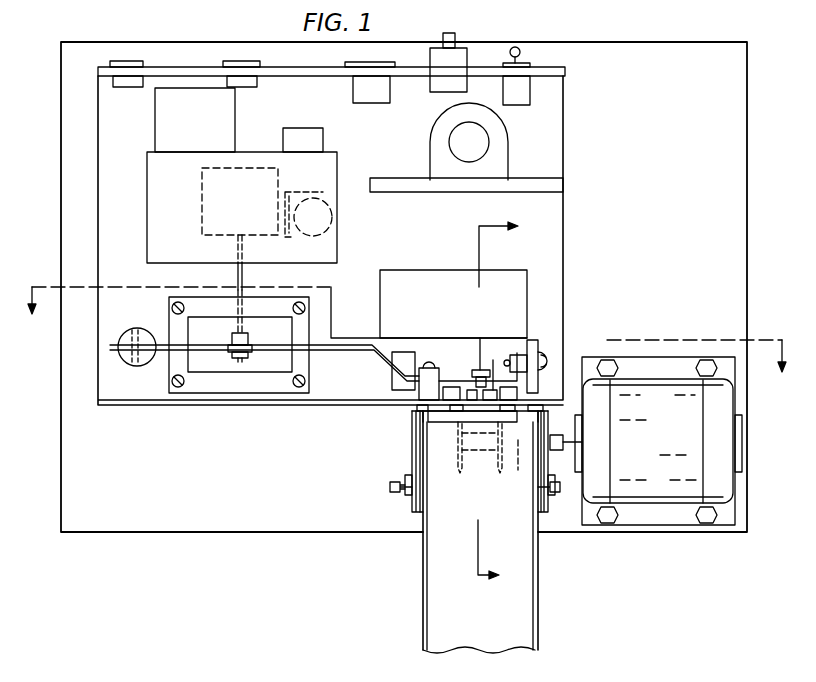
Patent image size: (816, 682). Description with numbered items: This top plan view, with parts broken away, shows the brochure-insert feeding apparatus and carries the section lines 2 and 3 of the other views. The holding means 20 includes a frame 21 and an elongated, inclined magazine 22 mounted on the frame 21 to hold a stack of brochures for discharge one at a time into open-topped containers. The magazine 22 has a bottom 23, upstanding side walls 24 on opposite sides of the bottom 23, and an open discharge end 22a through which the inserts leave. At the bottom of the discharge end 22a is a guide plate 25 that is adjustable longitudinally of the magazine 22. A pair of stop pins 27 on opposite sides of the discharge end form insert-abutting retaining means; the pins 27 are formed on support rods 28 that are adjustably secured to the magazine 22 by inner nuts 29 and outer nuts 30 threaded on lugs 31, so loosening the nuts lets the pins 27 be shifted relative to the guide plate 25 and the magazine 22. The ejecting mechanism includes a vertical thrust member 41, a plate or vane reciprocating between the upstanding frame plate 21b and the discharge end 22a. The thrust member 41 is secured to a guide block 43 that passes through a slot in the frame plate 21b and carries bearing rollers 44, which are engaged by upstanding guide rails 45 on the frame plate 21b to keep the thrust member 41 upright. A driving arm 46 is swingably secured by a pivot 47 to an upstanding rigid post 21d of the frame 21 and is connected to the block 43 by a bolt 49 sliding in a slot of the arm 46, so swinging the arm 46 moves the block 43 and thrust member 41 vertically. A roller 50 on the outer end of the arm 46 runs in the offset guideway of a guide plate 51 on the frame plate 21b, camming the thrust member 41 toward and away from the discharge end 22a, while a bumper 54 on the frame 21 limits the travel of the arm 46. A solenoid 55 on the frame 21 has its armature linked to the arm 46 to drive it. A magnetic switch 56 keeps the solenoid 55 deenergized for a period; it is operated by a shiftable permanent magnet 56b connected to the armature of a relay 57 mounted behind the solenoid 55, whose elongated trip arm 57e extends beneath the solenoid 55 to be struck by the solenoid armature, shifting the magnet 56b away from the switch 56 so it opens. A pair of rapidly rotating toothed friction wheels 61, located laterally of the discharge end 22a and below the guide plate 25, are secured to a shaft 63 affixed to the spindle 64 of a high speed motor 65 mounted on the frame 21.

The section line 2- 2 is at (404, 344).
The section line 3- 3 is at (505, 404).
The brochure holding means 20 is at (398, 515).
The frame 21 is at (190, 513).
The upstanding frame plate 21b is at (316, 402).
The upstanding rigid post 21d is at (158, 318).
The magazine 22 is at (422, 613).
The discharge end 22a is at (437, 423).
The bottom 23 is at (516, 622).
The side walls 24 is at (422, 582).
The guide plate 25 is at (449, 414).
The stop pins 27 is at (415, 409).
The support rods 28 is at (413, 452).
The inner nuts 29 is at (408, 494).
The outer nuts 30 is at (542, 493).
The lugs 31 is at (388, 487).
The thrust member 41 is at (504, 440).
The guide block 43 is at (496, 366).
The bearing rollers 44 is at (486, 390).
The guide rails 45 is at (450, 392).
The driving arm 46 is at (338, 351).
The pivot 47 is at (122, 362).
The bolt 49 is at (477, 368).
The roller 50 is at (548, 357).
The guide plate 51 is at (527, 348).
The bumper 54 is at (401, 352).
The solenoid 55 is at (262, 325).
The magnetic switch 56 is at (333, 217).
The permanent magnet 56b is at (313, 192).
The relay 57 is at (207, 190).
The trip arm 57e is at (236, 278).
The friction wheels 61 is at (462, 468).
The shaft 63 is at (500, 463).
The spindle 64 is at (570, 443).
The high speed motor 65 is at (672, 418).